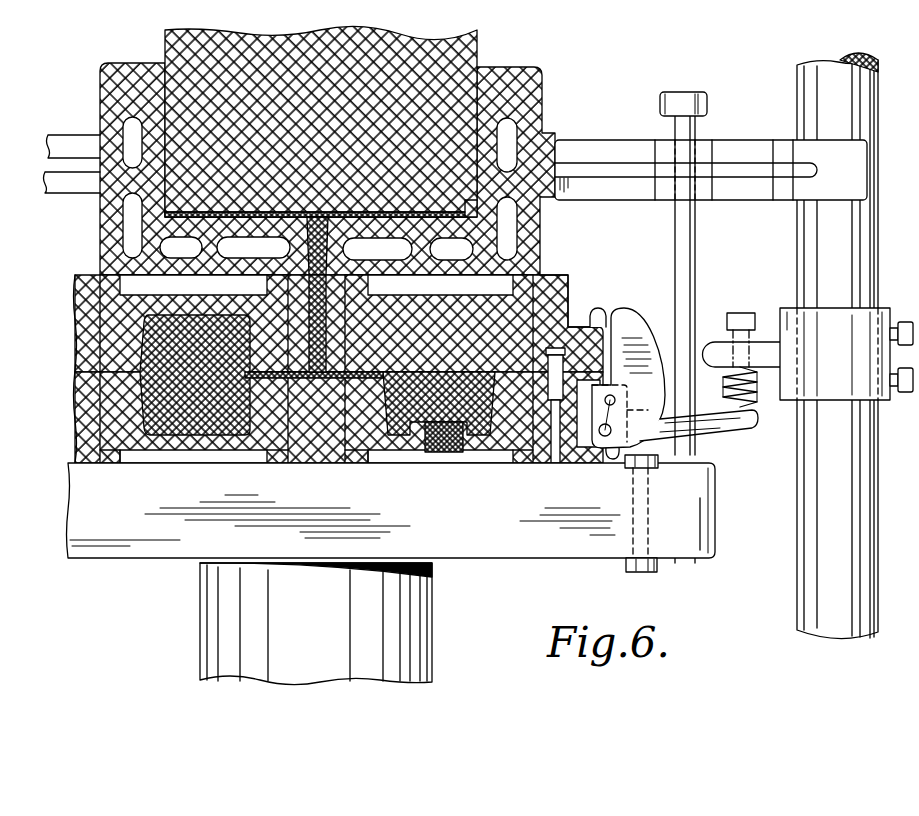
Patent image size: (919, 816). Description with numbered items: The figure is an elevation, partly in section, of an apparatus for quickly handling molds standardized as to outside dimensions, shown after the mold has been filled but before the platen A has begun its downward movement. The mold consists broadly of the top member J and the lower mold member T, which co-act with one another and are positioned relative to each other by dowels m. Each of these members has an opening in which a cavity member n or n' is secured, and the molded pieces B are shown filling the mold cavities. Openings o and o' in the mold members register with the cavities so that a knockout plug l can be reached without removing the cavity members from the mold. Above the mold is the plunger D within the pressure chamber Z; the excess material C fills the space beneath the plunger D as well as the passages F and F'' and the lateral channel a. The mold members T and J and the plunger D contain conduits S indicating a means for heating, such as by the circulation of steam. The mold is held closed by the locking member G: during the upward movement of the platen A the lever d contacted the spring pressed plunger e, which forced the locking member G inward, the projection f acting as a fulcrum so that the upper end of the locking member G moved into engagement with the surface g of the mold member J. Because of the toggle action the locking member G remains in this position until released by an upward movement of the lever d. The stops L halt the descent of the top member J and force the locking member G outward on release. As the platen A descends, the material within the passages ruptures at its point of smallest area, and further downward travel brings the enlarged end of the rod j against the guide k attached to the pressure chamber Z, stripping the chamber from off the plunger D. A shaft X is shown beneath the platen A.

The plunger D is at (478, 44).
The pressure chamber Z is at (478, 98).
The conduits S is at (137, 137).
The excess material C is at (317, 219).
The passage F is at (334, 200).
The passage F'' is at (350, 323).
The opening o is at (316, 264).
The opening o' is at (316, 483).
The top member of the mold J is at (562, 276).
The cavity member n is at (313, 369).
The cavity member n' is at (315, 472).
The surface of the mold member g is at (598, 327).
The locking member G is at (631, 316).
The stop L is at (782, 305).
The rod j is at (688, 93).
The guide k is at (732, 141).
The dowel m is at (565, 358).
The spring pressed plunger e is at (756, 404).
The lever d is at (726, 428).
The mold member T is at (82, 422).
The molded piece B is at (317, 375).
The lateral channel a is at (383, 379).
The knockout plug l is at (438, 452).
The projection f is at (608, 461).
The platen A is at (567, 556).
The shaft X is at (421, 613).